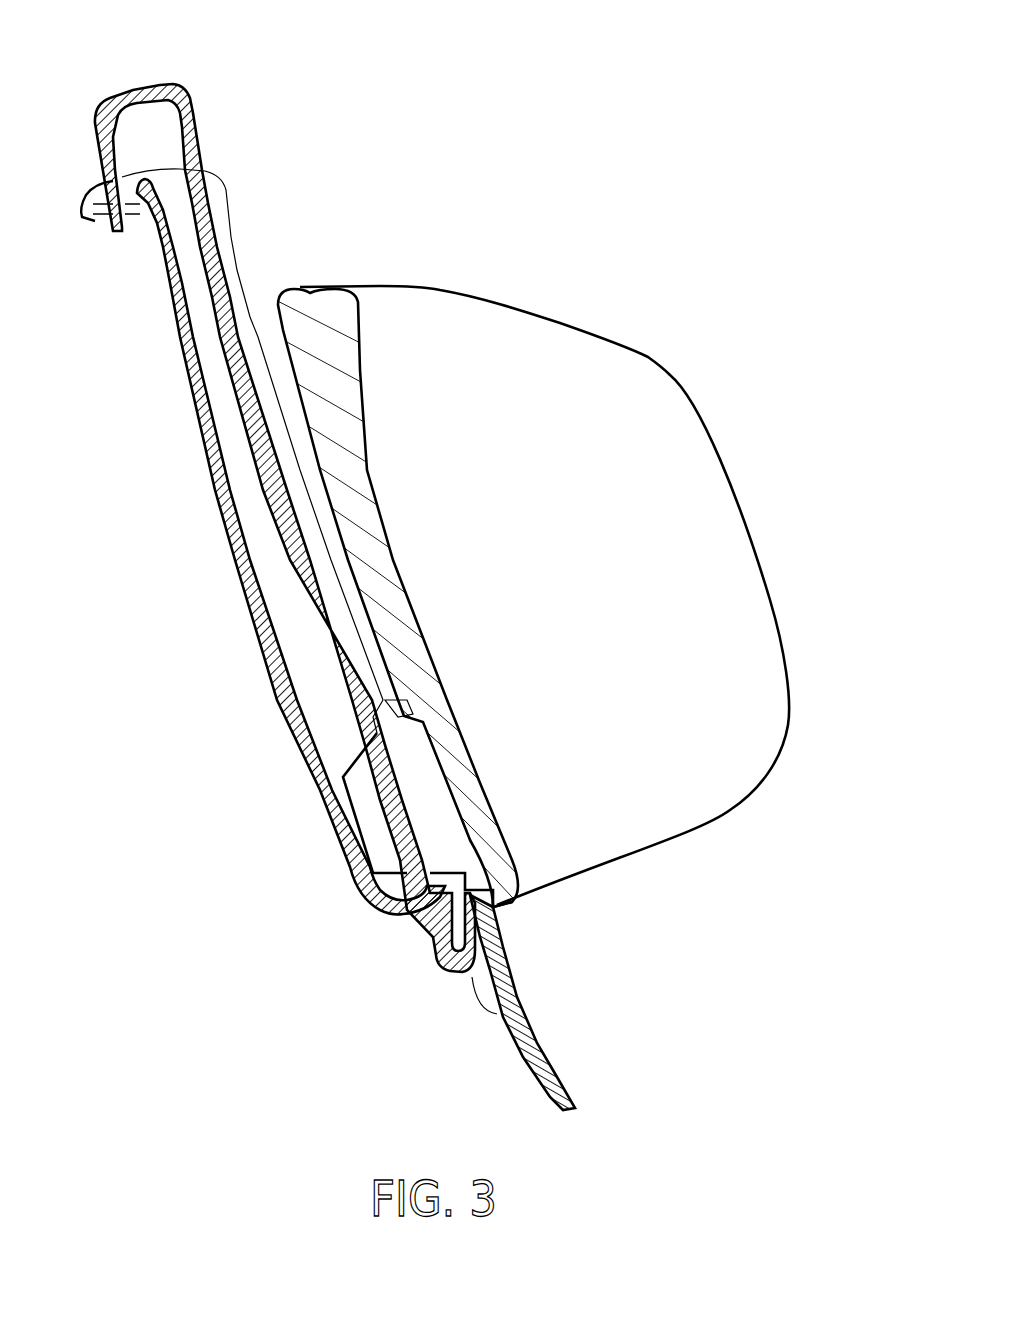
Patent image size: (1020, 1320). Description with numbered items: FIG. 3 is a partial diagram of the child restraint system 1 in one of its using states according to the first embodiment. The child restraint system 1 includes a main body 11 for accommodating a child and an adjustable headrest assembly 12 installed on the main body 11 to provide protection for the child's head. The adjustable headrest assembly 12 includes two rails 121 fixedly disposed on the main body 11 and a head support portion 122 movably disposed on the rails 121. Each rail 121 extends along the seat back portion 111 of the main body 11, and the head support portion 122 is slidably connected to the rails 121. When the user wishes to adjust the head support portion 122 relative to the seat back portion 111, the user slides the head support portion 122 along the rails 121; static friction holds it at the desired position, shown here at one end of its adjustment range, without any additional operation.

The child restraint system 1 is at (659, 72).
The main body 11 is at (603, 982).
The seat back portion 111 is at (557, 1068).
The adjustable headrest assembly 12 is at (184, 810).
The rail 121 is at (428, 888).
The head support portion 122 is at (500, 732).